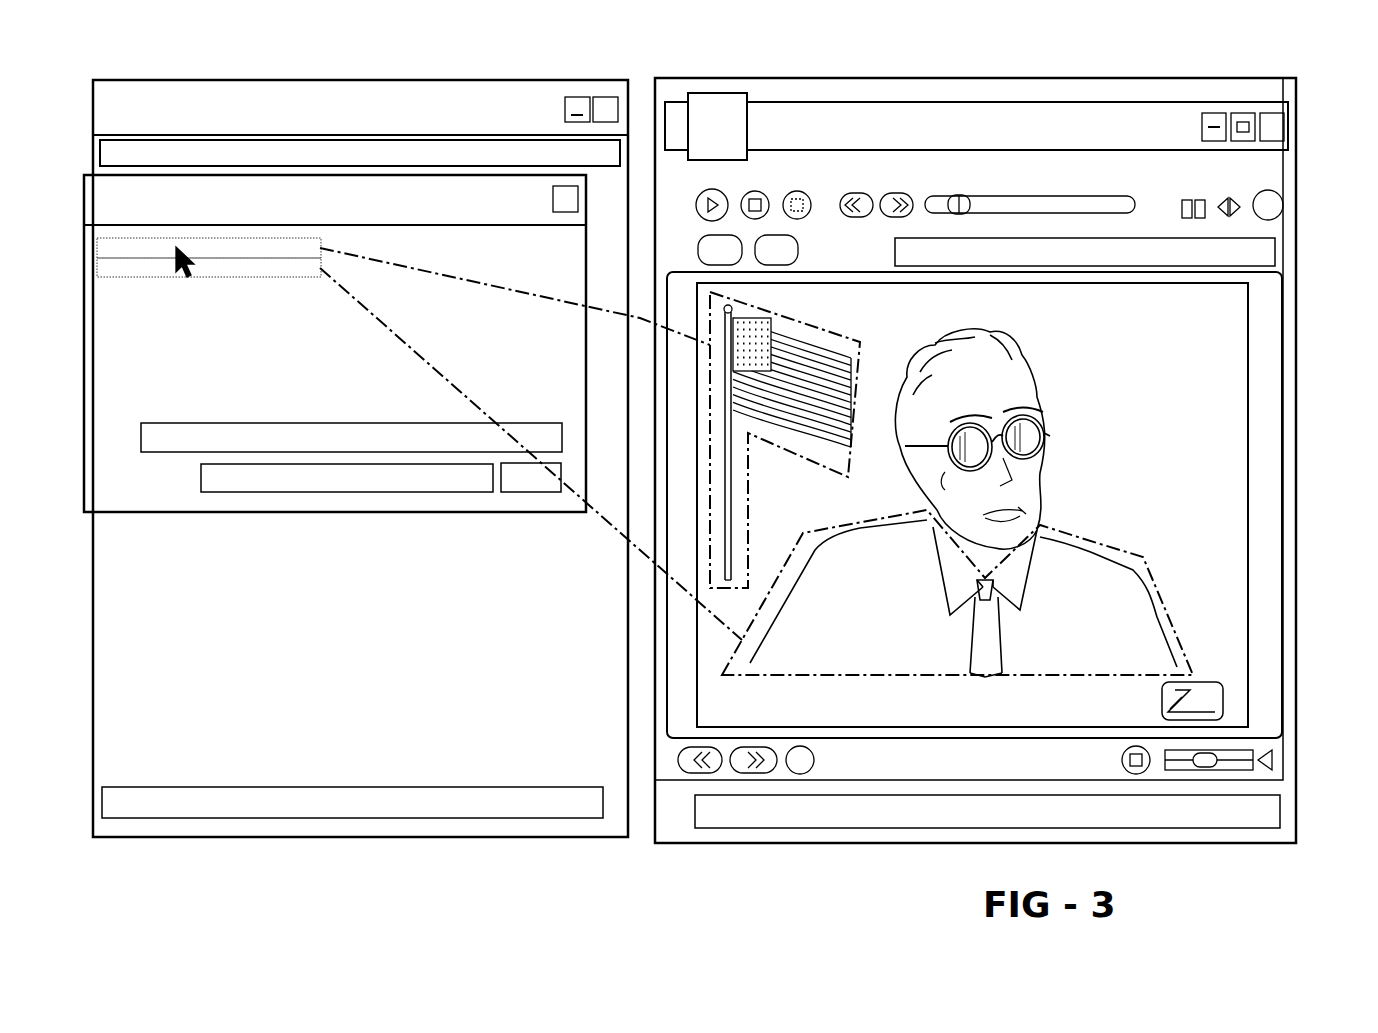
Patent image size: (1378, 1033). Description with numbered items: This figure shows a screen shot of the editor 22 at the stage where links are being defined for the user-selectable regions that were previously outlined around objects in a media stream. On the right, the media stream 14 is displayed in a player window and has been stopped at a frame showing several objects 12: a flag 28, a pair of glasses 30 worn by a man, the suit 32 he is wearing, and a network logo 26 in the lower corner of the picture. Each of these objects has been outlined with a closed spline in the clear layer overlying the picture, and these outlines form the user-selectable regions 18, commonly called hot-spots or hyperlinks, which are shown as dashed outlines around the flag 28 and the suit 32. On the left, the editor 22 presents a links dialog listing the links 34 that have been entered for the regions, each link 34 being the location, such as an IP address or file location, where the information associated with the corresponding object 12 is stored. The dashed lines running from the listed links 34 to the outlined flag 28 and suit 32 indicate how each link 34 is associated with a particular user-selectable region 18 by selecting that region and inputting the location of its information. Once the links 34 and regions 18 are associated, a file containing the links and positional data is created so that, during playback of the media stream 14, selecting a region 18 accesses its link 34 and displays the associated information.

The editor 22 is at (472, 38).
The link 34 is at (282, 290).
The media stream 14 is at (1253, 368).
The object 12 is at (1138, 431).
The flag 28 is at (812, 367).
The user-selectable region 18 is at (822, 463).
The pair of glasses 30 is at (1048, 433).
The suit 32 is at (1095, 545).
The network logo 26 is at (1210, 688).